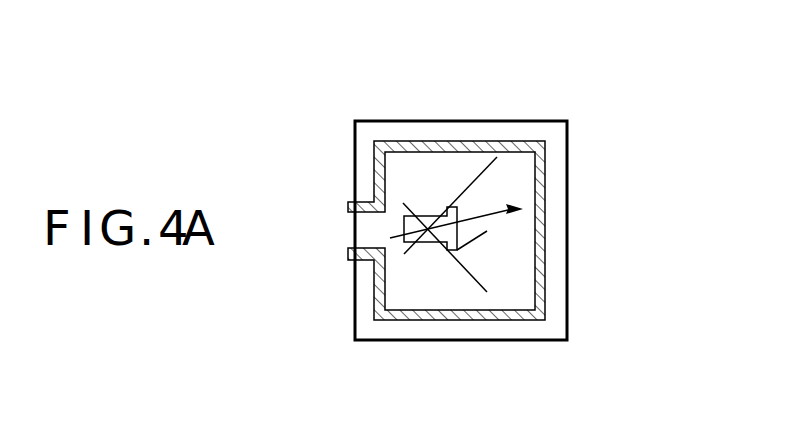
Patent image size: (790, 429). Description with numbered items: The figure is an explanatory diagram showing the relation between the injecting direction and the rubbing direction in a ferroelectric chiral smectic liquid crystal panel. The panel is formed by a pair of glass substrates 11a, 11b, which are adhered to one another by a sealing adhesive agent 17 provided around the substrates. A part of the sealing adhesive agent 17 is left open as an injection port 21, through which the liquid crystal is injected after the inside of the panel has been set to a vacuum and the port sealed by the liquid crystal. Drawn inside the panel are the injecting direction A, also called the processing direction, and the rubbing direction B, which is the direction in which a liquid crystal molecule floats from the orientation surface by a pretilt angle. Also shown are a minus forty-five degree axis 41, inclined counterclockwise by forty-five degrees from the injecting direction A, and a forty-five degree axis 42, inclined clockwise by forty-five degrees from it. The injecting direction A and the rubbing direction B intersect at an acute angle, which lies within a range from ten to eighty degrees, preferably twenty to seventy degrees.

The glass substrate 11a is at (543, 250).
The glass substrate 11b is at (556, 322).
The sealing adhesive agent 17 is at (547, 280).
The injection port 21 is at (367, 227).
The −45° axis 41 is at (464, 188).
The 45° axis 42 is at (452, 256).
The injecting direction A is at (487, 230).
The rubbing direction B is at (503, 210).